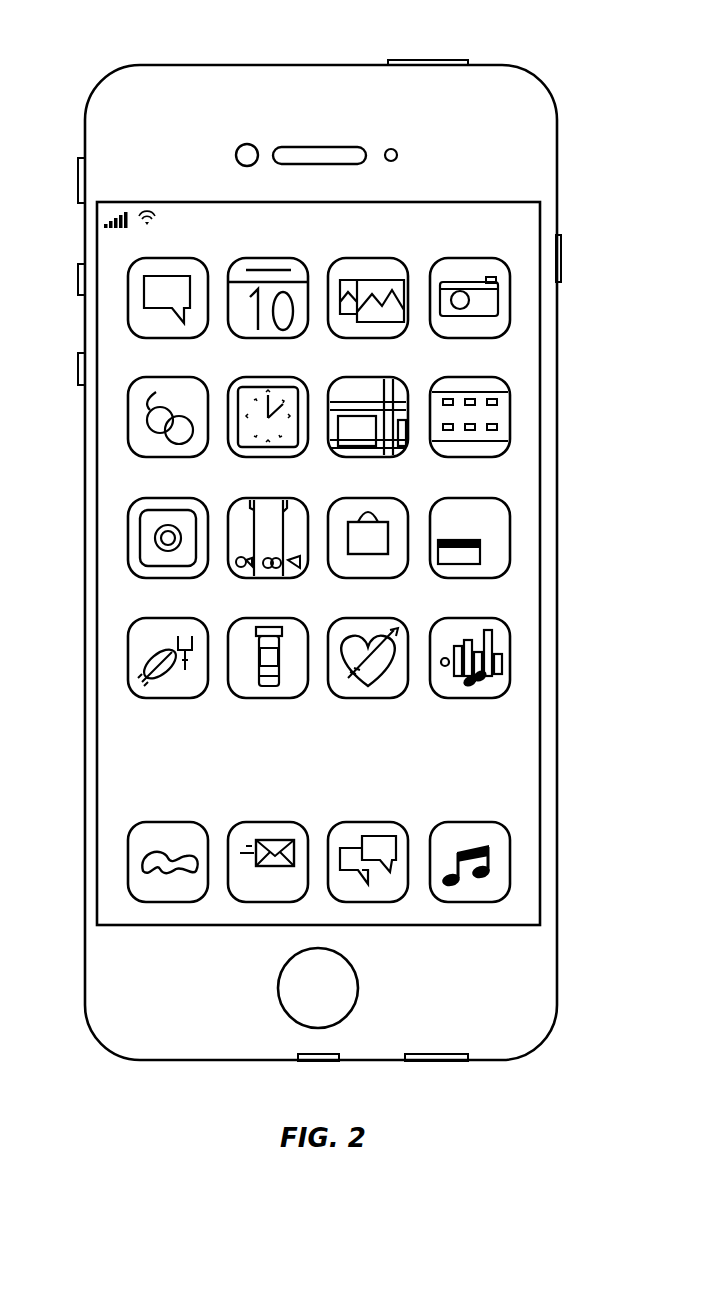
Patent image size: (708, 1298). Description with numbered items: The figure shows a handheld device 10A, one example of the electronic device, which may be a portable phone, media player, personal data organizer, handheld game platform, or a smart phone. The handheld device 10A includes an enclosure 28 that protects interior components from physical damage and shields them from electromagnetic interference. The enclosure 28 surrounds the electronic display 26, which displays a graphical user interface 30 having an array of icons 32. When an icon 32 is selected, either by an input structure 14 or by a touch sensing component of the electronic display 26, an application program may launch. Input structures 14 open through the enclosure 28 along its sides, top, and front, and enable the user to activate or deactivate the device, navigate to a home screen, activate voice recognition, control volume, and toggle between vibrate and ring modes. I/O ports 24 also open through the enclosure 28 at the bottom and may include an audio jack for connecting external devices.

The handheld device 10A is at (87, 60).
The input structures 14 is at (430, 60).
The I/O ports 24 is at (177, 1062).
The electronic display 26 is at (542, 474).
The enclosure 28 is at (558, 160).
The graphical user interface 30 is at (520, 333).
The icons 32 is at (369, 699).